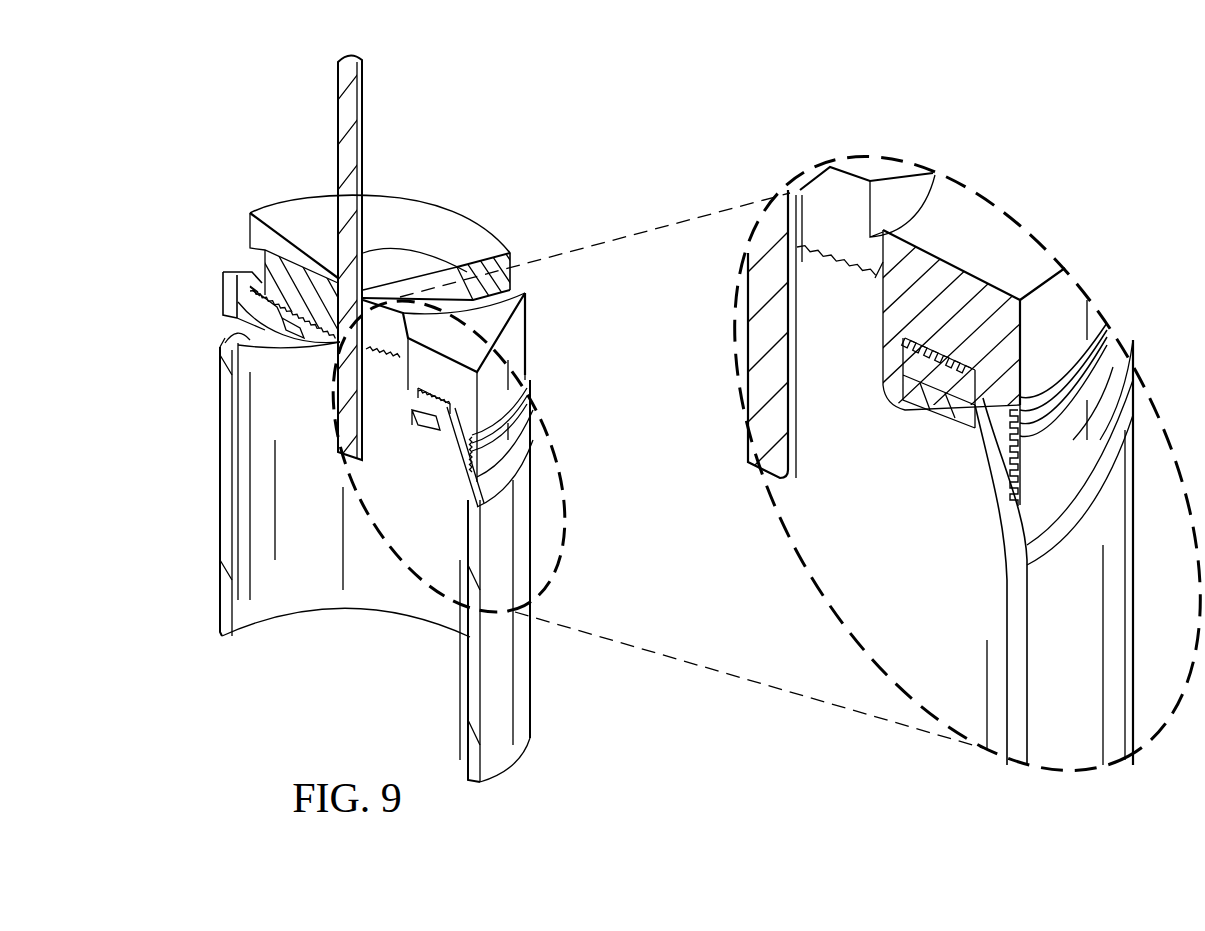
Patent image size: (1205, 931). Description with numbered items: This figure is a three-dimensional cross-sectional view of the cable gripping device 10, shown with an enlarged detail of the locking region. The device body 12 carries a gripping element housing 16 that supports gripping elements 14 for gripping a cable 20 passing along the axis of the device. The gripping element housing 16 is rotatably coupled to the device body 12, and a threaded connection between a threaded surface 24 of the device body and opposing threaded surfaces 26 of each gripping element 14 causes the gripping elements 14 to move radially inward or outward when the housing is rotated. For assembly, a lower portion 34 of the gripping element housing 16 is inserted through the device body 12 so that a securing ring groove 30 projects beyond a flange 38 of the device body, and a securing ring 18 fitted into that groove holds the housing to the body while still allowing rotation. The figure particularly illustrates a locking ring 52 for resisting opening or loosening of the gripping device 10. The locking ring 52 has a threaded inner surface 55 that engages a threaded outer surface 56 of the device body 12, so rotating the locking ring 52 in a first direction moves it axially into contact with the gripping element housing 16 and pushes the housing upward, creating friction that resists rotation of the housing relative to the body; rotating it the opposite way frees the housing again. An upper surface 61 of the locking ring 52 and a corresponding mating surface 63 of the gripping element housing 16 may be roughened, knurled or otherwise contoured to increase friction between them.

The cable gripping device 10 is at (215, 104).
The device body 12 is at (220, 512).
The gripping elements 14 is at (297, 250).
The gripping element housing 16 is at (450, 223).
The securing ring 18 is at (232, 335).
The cable 20 is at (338, 110).
The threaded surface 24 is at (250, 278).
The threaded surfaces 26 is at (311, 325).
The securing ring groove 30 is at (412, 413).
The lower portion 34 is at (307, 327).
The flange 38 is at (412, 405).
The locking ring 52 is at (222, 298).
The threaded inner surface 55 is at (1007, 473).
The threaded outer surface 56 is at (1005, 507).
The upper surface 61 is at (1053, 418).
The mating surface 63 is at (1007, 410).